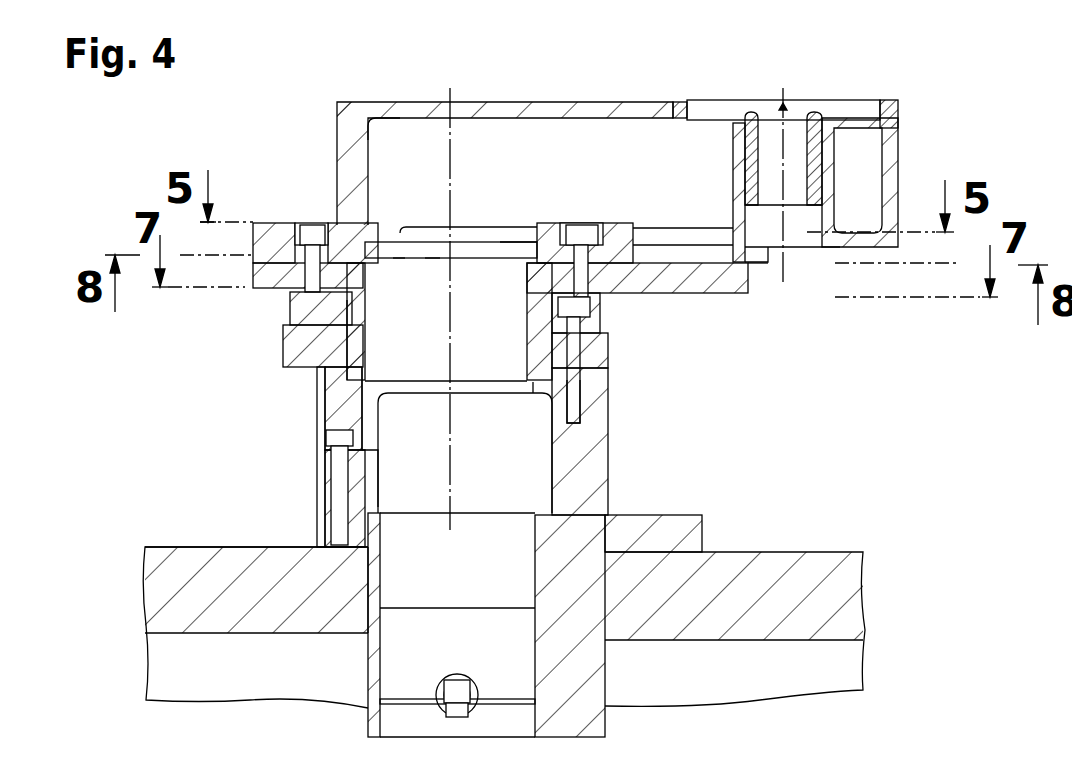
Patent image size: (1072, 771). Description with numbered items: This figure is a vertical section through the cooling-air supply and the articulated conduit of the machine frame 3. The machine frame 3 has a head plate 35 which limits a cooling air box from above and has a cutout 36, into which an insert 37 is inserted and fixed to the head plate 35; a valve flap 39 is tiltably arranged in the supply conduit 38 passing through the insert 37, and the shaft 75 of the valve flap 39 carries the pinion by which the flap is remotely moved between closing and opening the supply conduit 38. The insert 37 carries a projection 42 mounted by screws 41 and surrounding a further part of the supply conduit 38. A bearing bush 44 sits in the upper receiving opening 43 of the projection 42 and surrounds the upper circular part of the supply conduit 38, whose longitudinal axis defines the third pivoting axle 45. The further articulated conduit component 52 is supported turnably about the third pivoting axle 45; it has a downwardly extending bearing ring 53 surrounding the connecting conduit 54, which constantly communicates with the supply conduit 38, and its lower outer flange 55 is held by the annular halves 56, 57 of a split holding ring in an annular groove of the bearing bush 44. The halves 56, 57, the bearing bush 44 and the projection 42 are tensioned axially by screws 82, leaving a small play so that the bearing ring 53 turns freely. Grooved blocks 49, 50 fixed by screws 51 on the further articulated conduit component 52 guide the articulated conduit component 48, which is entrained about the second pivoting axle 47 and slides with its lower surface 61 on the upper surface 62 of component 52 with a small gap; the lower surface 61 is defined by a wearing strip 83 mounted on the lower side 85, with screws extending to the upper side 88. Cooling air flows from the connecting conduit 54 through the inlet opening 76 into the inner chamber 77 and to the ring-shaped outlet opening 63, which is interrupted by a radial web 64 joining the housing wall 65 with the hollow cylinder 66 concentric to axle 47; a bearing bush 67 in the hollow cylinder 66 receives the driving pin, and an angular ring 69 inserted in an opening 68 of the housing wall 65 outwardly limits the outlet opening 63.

The machine frame 3 is at (190, 547).
The head plate 35 is at (238, 546).
The cutout 36 is at (590, 650).
The insert 37 is at (665, 513).
The supply conduit 38 is at (541, 452).
The valve flap 39 is at (402, 700).
The screws 41 is at (333, 436).
The projection 42 is at (610, 416).
The upper receiving opening 43 is at (532, 390).
The bearing bush 44 is at (608, 356).
The third pivoting axle 45 is at (452, 90).
The second pivoting axle 47 is at (790, 86).
The articulated conduit component 48 is at (336, 123).
The grooved block 49 is at (270, 232).
The grooved block 50 is at (547, 238).
The screws 51 is at (310, 235).
The further articulated conduit component 52 is at (748, 300).
The bearing ring 53 is at (355, 321).
The connecting conduit 54 is at (468, 318).
The lower outer flange 55 is at (300, 348).
The annular half 56 is at (298, 310).
The annular half 57 is at (600, 310).
The lower surface 61 is at (466, 253).
The upper surface 62 is at (415, 237).
The outlet opening 63 is at (723, 108).
The radial web 64 is at (862, 175).
The housing wall 65 is at (524, 101).
The hollow cylinder 66 is at (738, 218).
The bearing bush 67 is at (752, 182).
The opening 68 is at (690, 109).
The angular ring 69 is at (888, 100).
The shaft 75 is at (472, 688).
The inlet opening 76 is at (507, 254).
The inner chamber 77 is at (404, 126).
The screws 82 is at (576, 396).
The wearing strip 83 is at (394, 252).
The lower side 85 is at (433, 249).
The upper side 88 is at (598, 101).